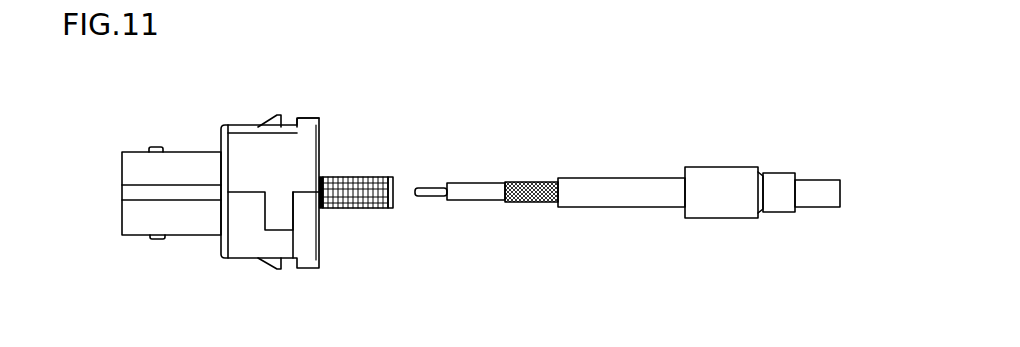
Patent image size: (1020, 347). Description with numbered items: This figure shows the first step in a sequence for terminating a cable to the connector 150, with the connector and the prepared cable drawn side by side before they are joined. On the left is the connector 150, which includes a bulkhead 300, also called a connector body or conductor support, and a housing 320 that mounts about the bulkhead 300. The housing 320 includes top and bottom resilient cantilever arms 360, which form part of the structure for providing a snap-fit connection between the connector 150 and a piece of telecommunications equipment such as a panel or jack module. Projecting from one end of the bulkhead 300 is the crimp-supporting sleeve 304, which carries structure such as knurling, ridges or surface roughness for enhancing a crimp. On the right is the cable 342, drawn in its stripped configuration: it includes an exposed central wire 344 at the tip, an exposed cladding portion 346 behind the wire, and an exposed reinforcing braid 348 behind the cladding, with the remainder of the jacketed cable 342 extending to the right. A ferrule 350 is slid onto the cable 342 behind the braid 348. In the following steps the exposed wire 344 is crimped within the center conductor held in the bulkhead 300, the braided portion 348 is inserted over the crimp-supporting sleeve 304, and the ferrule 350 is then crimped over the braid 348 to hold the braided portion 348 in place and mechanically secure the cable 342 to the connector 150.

The connector 150 is at (124, 250).
The bulkhead 300 is at (171, 147).
The resilient cantilever arms 360 is at (265, 123).
The housing 320 is at (314, 111).
The crimp-supporting sleeve 304 is at (357, 210).
The cable 342 is at (608, 178).
The exposed central wire 344 is at (432, 200).
The exposed cladding portion 346 is at (467, 184).
The exposed reinforcing braid 348 is at (533, 205).
The ferrule 350 is at (735, 217).